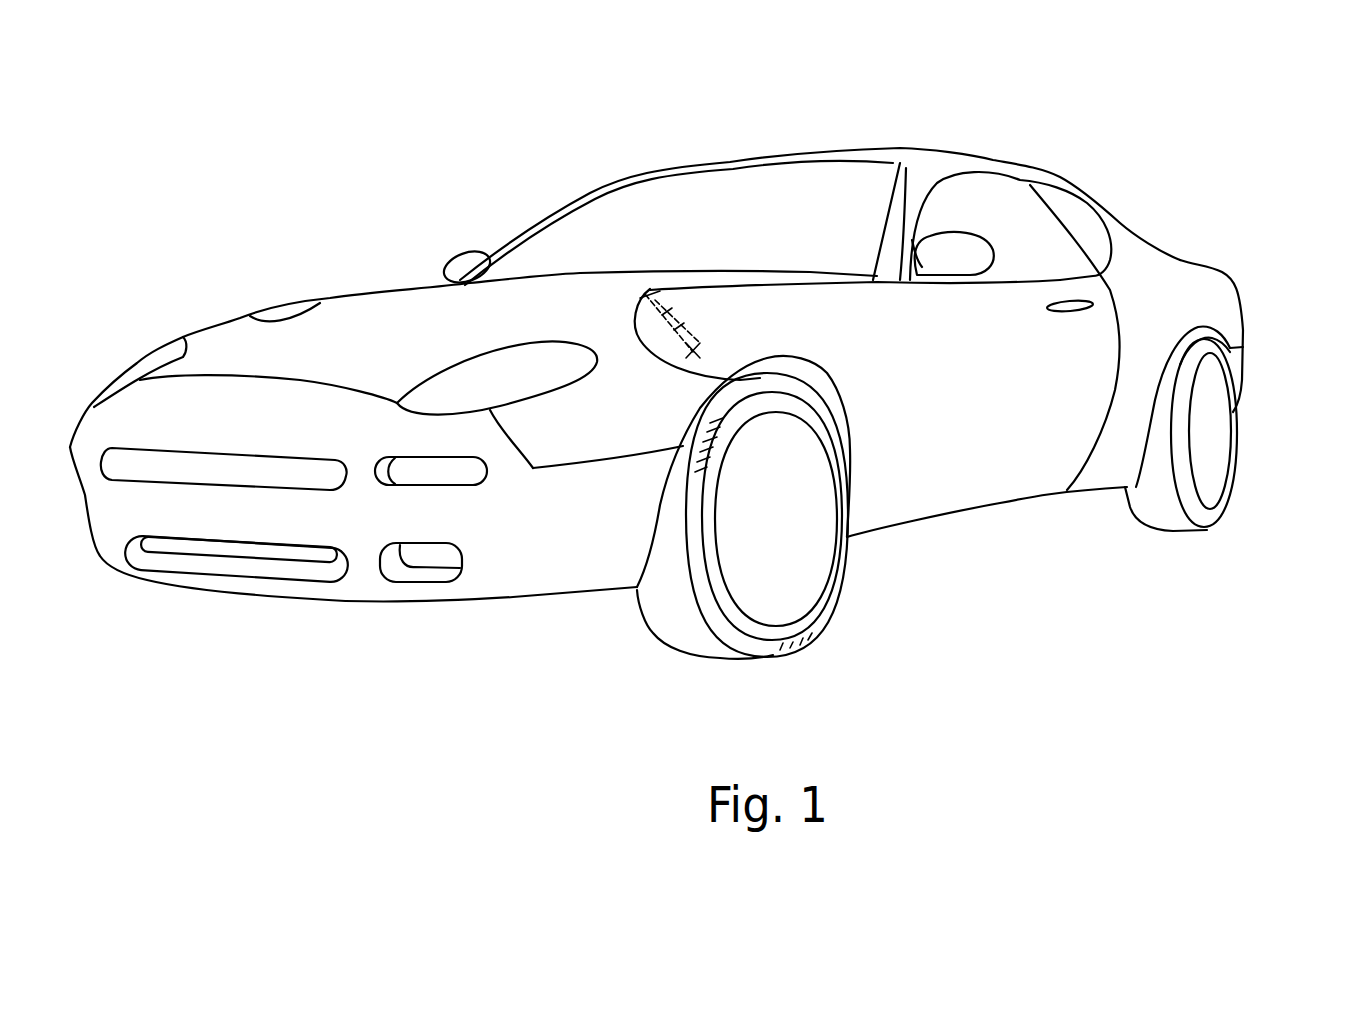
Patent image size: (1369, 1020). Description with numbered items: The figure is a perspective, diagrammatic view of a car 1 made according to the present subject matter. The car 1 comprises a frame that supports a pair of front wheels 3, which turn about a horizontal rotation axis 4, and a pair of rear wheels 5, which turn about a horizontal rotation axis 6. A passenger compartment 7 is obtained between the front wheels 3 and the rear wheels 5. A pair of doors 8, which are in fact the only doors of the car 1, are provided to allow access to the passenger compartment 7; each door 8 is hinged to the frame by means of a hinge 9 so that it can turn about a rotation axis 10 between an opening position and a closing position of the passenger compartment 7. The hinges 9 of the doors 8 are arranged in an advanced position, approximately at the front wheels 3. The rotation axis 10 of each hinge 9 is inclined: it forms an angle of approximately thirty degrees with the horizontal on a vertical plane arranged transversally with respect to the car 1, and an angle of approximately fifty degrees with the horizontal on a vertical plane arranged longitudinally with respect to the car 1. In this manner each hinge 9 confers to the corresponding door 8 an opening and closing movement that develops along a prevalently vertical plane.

The car 1 is at (323, 214).
The front wheels 3 is at (795, 649).
The rotation axis 4 is at (767, 517).
The rear wheels 5 is at (1187, 527).
The rotation axis 6 is at (1210, 433).
The passenger compartment 7 is at (986, 132).
The doors 8 is at (1007, 420).
The hinge 9 is at (698, 318).
The rotation axis 10 is at (648, 296).